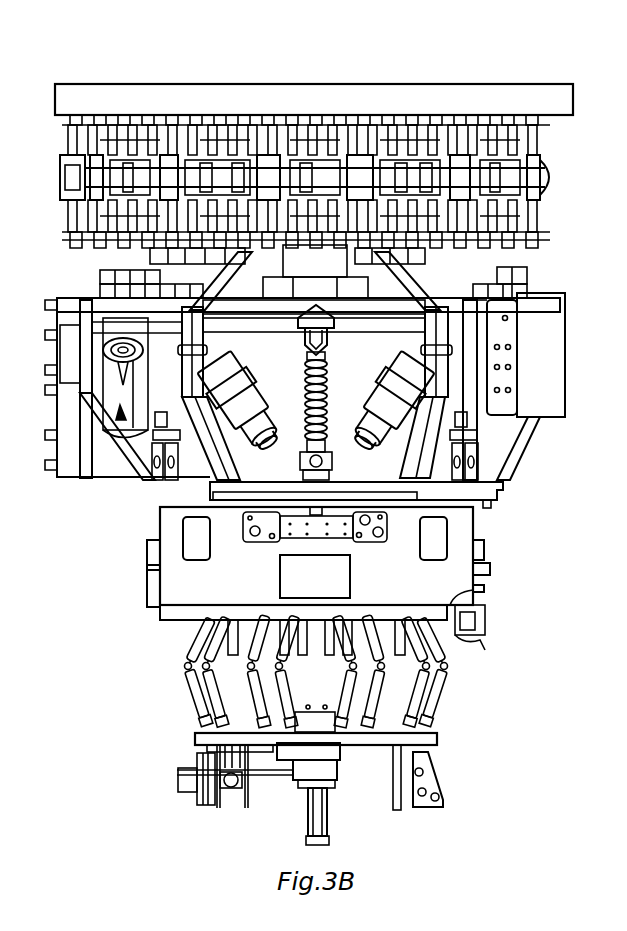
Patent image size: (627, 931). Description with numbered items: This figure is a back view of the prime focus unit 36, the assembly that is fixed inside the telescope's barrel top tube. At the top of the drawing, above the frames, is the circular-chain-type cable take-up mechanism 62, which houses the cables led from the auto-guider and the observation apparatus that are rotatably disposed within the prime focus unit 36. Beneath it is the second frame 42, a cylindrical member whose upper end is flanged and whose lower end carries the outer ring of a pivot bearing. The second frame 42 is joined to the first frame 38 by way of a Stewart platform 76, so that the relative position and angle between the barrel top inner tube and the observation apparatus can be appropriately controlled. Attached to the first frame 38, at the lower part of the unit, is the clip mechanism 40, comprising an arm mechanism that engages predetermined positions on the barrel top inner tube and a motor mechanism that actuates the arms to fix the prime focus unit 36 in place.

The prime focus unit 36 is at (109, 83).
The cable take-up mechanism 62 is at (545, 132).
The second frame 42 is at (463, 307).
The first frame 38 is at (483, 552).
The clip mechanism 40 is at (447, 699).
The Stewart platform 76 is at (113, 470).